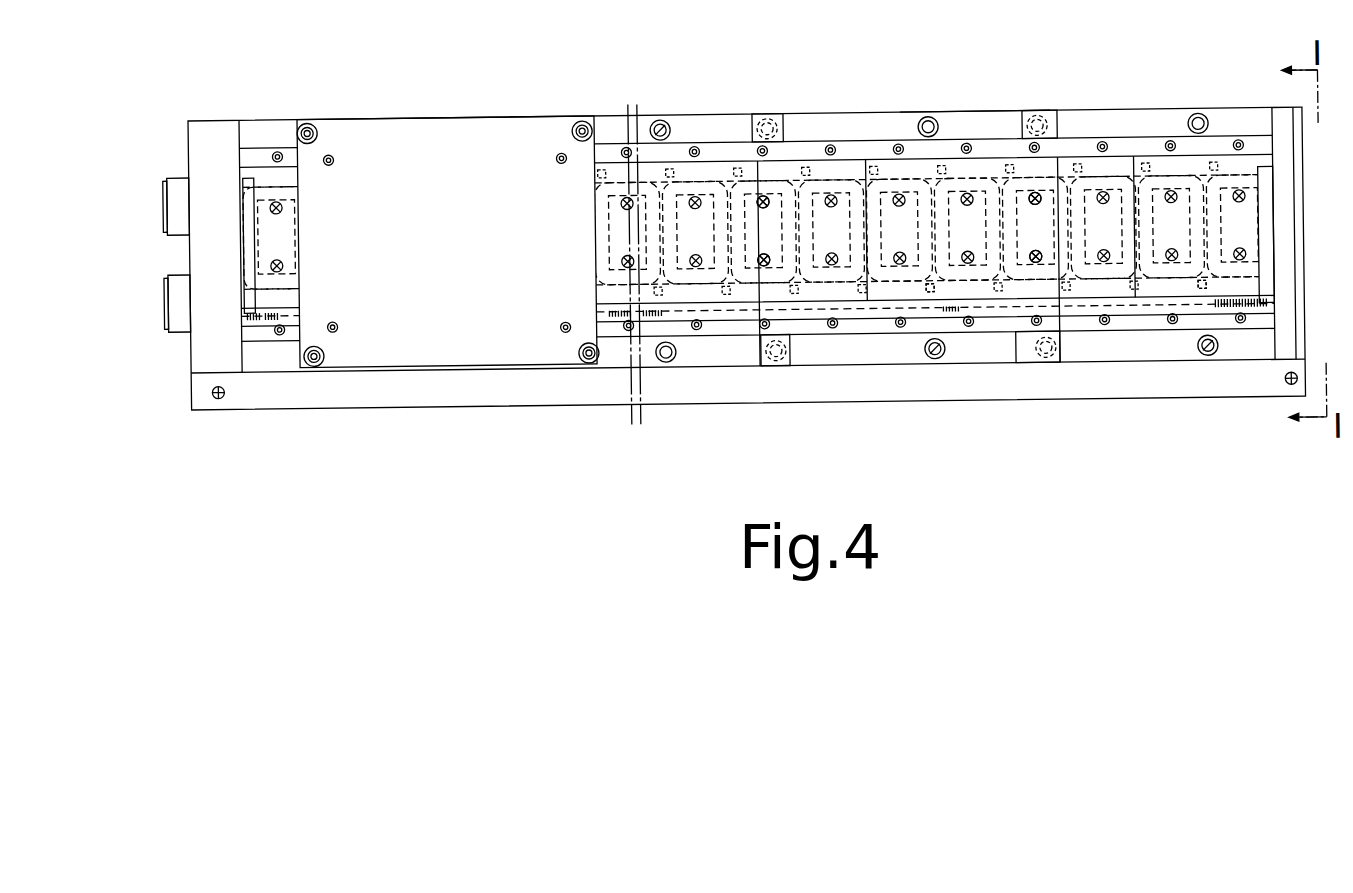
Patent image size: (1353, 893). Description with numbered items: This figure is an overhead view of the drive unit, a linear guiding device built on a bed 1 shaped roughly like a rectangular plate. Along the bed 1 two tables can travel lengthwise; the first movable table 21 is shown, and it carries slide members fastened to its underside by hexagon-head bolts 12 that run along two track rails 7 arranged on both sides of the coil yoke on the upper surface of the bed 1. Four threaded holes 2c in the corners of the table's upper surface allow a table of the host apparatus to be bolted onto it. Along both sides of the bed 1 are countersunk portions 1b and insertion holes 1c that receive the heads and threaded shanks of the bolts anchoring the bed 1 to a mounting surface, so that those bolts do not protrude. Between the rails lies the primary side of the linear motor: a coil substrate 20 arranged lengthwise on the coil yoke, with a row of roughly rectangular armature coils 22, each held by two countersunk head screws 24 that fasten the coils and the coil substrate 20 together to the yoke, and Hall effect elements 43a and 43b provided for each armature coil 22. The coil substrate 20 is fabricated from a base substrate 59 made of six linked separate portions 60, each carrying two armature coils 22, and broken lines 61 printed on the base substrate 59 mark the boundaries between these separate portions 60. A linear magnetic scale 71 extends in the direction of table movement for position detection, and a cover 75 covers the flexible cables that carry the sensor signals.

The bed 1 is at (272, 362).
The countersunk portions 1b is at (1205, 366).
The insertion holes 1c is at (1212, 362).
The threaded holes 2c is at (563, 337).
The track rails 7 is at (722, 160).
The bolts 12 is at (586, 369).
The coil substrate 20 is at (1160, 313).
The first movable table 21 is at (951, 125).
The armature coils 22 is at (267, 188).
The countersunk head screws 24 is at (1036, 261).
The Hall effect elements 43a is at (1217, 317).
The Hall effect elements 43b is at (1216, 180).
The base substrate 59 is at (1098, 313).
The separate portions 60 is at (1176, 288).
The broken lines 61 is at (998, 170).
The linear magnetic scale 71 is at (1057, 330).
The cover 75 is at (458, 395).